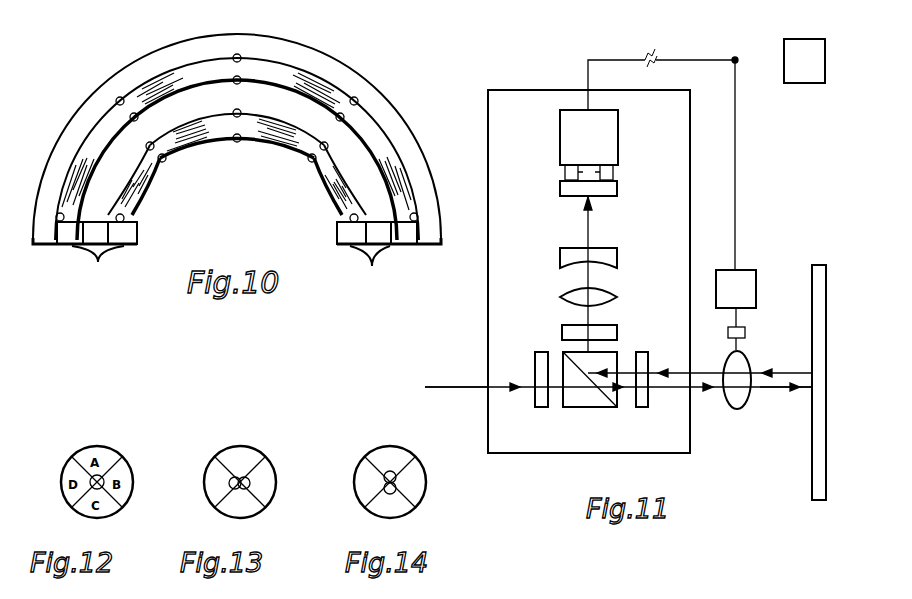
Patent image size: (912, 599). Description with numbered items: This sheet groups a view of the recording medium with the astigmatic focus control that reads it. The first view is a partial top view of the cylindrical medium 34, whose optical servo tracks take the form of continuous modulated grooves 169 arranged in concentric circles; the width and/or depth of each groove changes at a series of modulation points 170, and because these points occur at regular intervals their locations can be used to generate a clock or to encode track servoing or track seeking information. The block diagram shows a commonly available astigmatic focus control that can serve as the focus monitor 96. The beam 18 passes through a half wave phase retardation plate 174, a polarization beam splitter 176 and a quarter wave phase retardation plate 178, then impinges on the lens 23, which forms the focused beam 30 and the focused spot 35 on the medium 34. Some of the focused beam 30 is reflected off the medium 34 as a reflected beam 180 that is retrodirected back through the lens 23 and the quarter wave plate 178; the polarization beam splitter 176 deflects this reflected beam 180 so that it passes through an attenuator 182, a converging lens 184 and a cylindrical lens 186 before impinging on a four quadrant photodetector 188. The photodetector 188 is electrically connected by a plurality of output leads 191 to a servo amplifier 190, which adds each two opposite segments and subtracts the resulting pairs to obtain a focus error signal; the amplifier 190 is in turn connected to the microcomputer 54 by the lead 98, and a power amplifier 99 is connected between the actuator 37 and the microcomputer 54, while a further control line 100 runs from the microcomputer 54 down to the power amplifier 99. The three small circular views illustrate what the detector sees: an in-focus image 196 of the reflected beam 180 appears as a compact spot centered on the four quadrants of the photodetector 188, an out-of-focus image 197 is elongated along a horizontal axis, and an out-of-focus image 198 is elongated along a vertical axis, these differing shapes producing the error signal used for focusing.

In FIG. 11, the beam 18 is at (470, 390).
In FIG. 11, the lens 23 is at (737, 410).
In FIG. 11, the focused beam 30 is at (760, 388).
In FIG. 10, the medium 34 is at (345, 64).
In FIG. 11, the medium 34 is at (828, 268).
In FIG. 11, the focused spot 35 is at (826, 386).
In FIG. 11, the actuator 37 is at (745, 333).
In FIG. 11, the microcomputer 54 is at (815, 73).
In FIG. 11, the focus monitor 96 is at (528, 90).
In FIG. 11, the lead 98 is at (598, 60).
In FIG. 11, the power amplifier 99 is at (746, 301).
In FIG. 11, the control line 100 is at (736, 155).
In FIG. 10, the modulated grooves 169 is at (237, 259).
In FIG. 10, the modulation points 170 is at (237, 62).
In FIG. 11, the half wave phase retardation plate 174 is at (535, 408).
In FIG. 11, the polarization beam splitter 176 is at (612, 350).
In FIG. 11, the quarter wave phase retardation plate 178 is at (641, 408).
In FIG. 11, the reflected beam 180 is at (585, 237).
In FIG. 11, the attenuator 182 is at (562, 331).
In FIG. 11, the converging lens 184 is at (560, 296).
In FIG. 11, the cylindrical lens 186 is at (560, 258).
In FIG. 11, the four quadrant photodetector 188 is at (560, 190).
In FIG. 12, the four quadrant photodetector 188 is at (104, 457).
In FIG. 13, the four quadrant photodetector 188 is at (246, 456).
In FIG. 14, the four quadrant photodetector 188 is at (388, 456).
In FIG. 11, the servo amplifier 190 is at (598, 148).
In FIG. 11, the output leads 191 is at (565, 172).
In FIG. 12, the in-focus image 196 is at (90, 485).
In FIG. 13, the out-of-focus image 197 is at (232, 486).
In FIG. 14, the out-of-focus image 198 is at (383, 487).